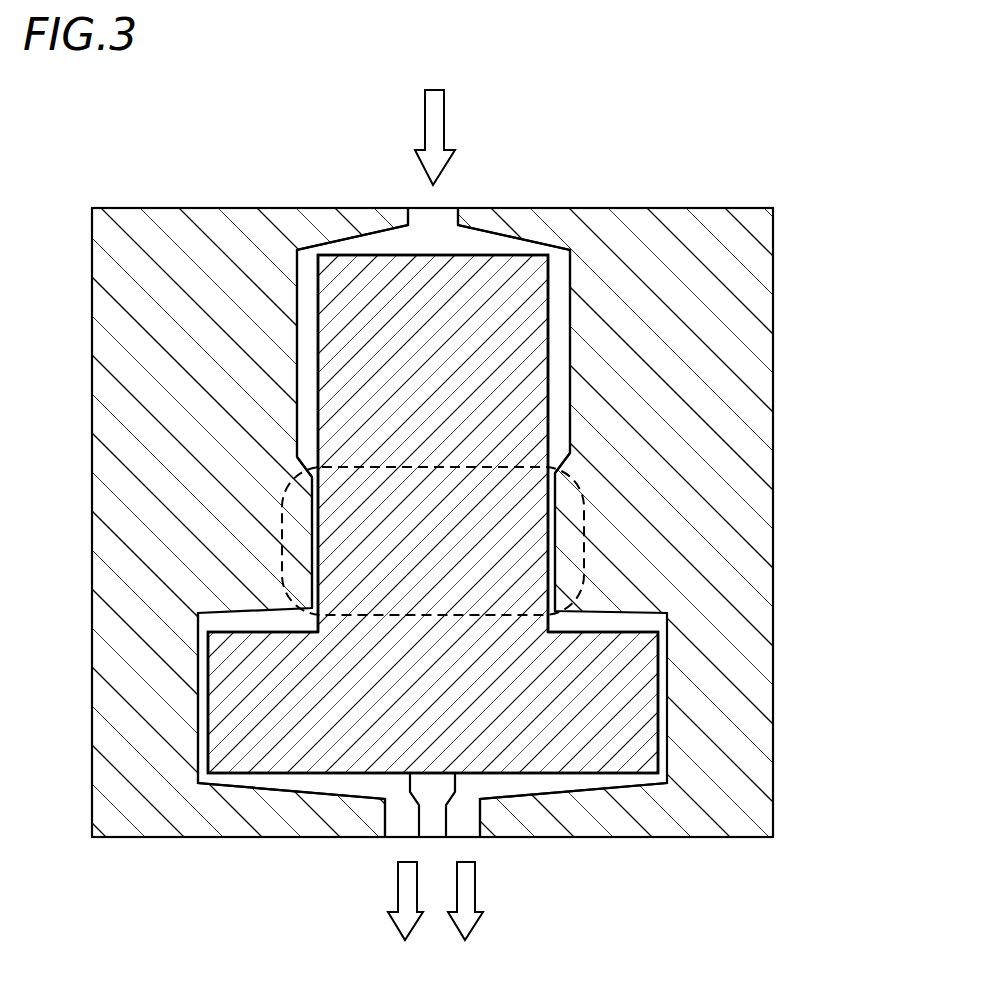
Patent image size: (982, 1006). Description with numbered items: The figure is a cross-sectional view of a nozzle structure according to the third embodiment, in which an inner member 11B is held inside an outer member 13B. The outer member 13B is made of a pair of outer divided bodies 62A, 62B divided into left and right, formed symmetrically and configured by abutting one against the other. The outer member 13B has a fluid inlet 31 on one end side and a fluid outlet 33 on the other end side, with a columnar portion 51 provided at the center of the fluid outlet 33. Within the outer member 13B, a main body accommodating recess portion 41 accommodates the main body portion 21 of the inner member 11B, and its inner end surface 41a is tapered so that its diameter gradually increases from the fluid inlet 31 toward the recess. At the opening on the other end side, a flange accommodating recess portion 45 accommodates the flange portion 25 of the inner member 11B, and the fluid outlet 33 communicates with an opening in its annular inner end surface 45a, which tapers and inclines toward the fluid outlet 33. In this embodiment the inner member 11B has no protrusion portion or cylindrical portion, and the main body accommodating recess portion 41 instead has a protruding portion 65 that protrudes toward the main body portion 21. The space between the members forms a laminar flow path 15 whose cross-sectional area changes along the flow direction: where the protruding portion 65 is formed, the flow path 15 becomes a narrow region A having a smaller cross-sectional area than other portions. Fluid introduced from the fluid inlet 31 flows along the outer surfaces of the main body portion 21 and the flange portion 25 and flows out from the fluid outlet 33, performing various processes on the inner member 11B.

The outer member 13B is at (758, 197).
The outer divided body 62A is at (130, 273).
The outer divided body 62B is at (750, 272).
The fluid inlet 31 is at (427, 220).
The main body accommodating recess portion 41 is at (298, 318).
The inner end surface 41a is at (484, 250).
The flow path 15 is at (563, 433).
The protruding portion 65 is at (299, 537).
The narrow region A is at (585, 528).
The inner member 11B is at (537, 727).
The main body portion 21 is at (345, 430).
The flange portion 25 is at (265, 725).
The flange accommodating recess portion 45 is at (258, 784).
The inner end surface 45a is at (336, 789).
The fluid outlet 33 is at (410, 825).
The columnar portion 51 is at (437, 815).